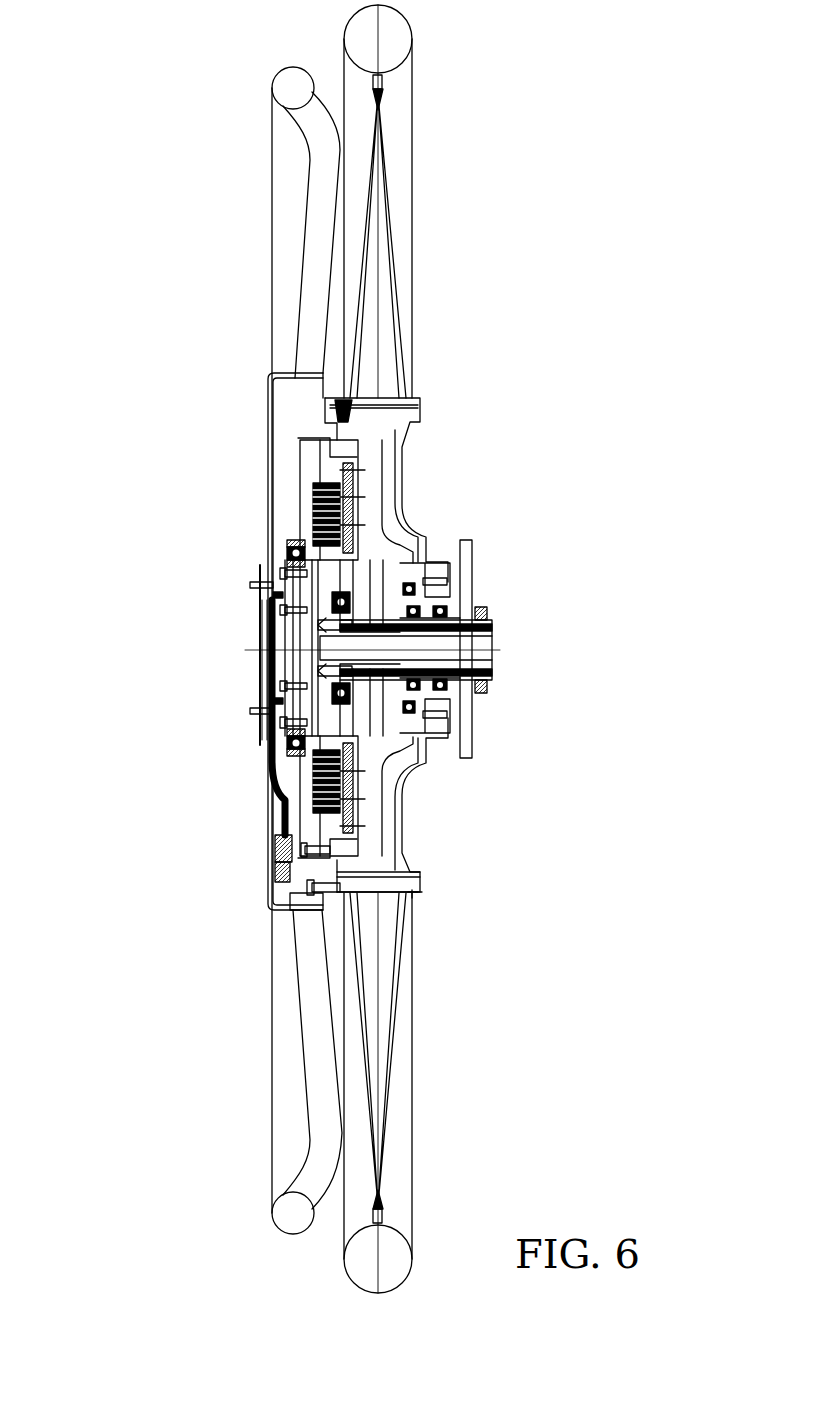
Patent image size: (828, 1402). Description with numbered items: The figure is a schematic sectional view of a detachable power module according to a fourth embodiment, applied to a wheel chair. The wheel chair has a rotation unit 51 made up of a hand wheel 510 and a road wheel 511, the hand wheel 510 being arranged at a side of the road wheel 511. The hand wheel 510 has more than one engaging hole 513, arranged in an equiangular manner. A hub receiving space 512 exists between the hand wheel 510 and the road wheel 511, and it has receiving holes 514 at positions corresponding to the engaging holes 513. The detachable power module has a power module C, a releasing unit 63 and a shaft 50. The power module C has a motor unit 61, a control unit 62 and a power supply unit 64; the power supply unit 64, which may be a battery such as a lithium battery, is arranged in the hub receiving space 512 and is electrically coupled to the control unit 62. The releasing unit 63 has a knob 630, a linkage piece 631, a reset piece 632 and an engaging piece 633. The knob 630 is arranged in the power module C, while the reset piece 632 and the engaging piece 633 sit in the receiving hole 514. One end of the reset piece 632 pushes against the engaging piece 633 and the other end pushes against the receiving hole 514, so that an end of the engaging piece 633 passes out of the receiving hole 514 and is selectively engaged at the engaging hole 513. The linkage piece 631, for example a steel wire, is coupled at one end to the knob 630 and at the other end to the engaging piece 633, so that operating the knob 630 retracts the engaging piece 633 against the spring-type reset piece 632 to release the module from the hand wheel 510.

The rotation unit 51 is at (220, 110).
The hand wheel 510 is at (282, 248).
The road wheel 511 is at (398, 116).
The hub receiving space 512 is at (287, 417).
The engaging hole 513 is at (340, 897).
The receiving hole 514 is at (338, 868).
The shaft 50 is at (492, 672).
The motor unit 61 is at (300, 488).
The control unit 62 is at (308, 633).
The releasing unit 63 is at (150, 752).
The knob 630 is at (268, 652).
The linkage piece 631 is at (272, 812).
The reset piece 632 is at (277, 848).
The engaging piece 633 is at (277, 885).
The power supply unit 64 is at (390, 737).
The power module C is at (277, 545).